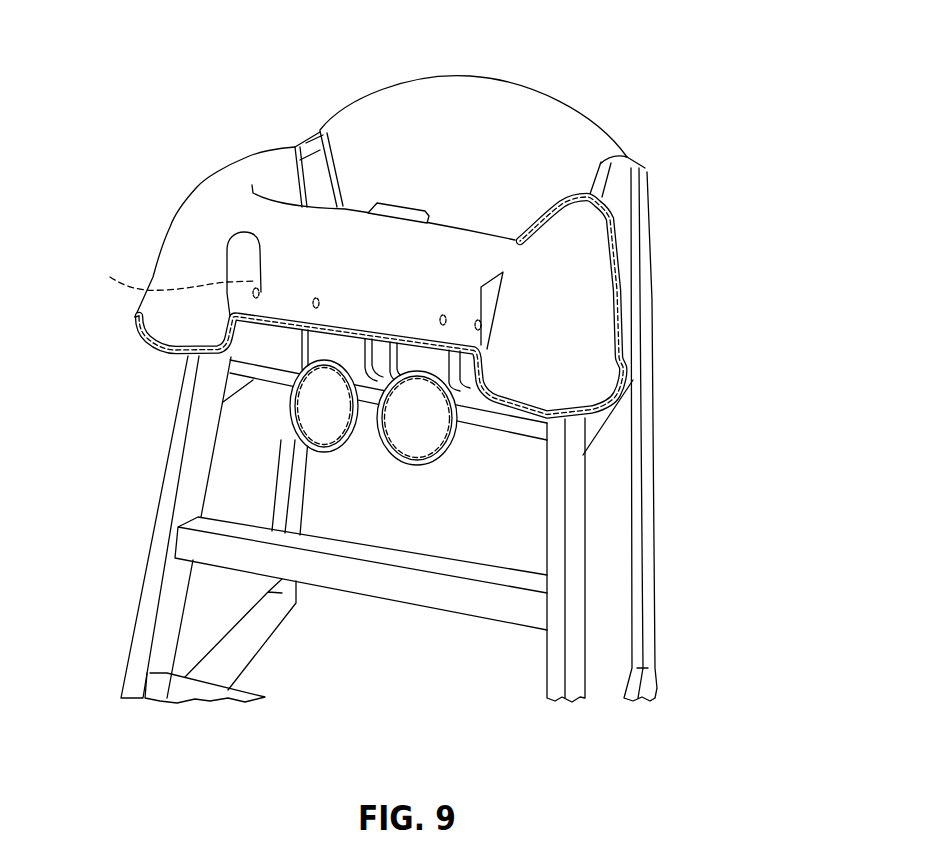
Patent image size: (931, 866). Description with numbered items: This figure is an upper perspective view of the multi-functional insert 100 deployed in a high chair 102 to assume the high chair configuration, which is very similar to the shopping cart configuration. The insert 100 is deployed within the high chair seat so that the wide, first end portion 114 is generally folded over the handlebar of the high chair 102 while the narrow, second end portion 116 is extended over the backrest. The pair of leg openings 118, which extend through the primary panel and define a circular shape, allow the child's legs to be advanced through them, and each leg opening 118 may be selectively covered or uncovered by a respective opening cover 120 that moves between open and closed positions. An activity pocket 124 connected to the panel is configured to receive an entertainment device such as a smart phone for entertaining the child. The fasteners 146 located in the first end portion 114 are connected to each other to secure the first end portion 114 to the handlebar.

The multi-functional insert 100 is at (417, 355).
The high chair 102 is at (661, 532).
The first end portion 114 is at (399, 273).
The second end portion 116 is at (493, 76).
The leg openings 118 is at (320, 338).
The opening covers 120 is at (328, 430).
The activity pocket 124 is at (405, 200).
The fasteners 146 is at (159, 274).